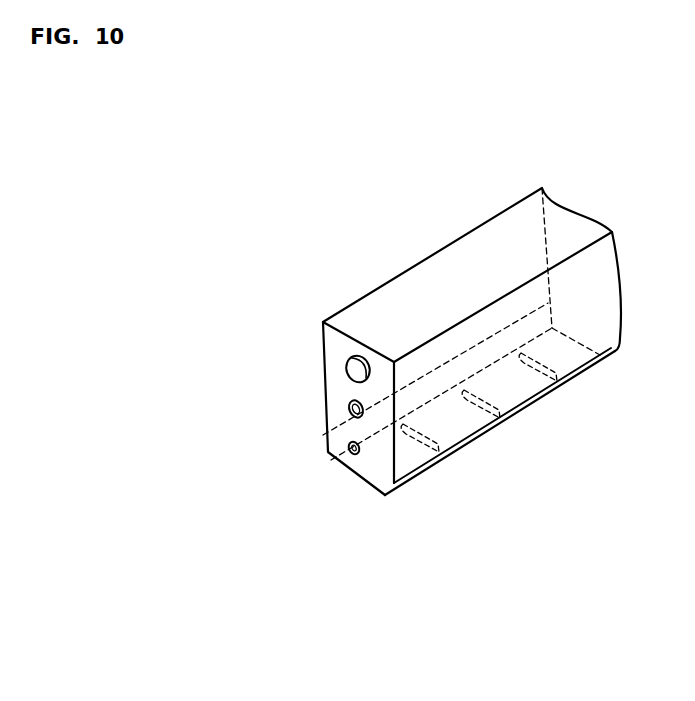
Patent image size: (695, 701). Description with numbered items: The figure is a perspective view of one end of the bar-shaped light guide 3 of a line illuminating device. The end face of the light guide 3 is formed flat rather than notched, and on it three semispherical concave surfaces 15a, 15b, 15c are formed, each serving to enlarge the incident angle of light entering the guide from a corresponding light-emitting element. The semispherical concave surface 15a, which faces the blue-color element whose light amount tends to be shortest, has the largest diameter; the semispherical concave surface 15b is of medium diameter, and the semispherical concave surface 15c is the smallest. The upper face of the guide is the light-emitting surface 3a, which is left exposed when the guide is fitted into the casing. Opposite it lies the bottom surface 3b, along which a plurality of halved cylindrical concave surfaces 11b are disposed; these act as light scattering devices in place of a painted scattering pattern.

The bar-shaped light guide 3 is at (421, 367).
The light-emitting surface 3a is at (484, 252).
The bottom surface 3b is at (352, 481).
The halved cylindrical concave surfaces 11b is at (438, 450).
The semispherical concave surface 15a is at (346, 361).
The semispherical concave surface 15b is at (349, 407).
The semispherical concave surface 15c is at (348, 448).